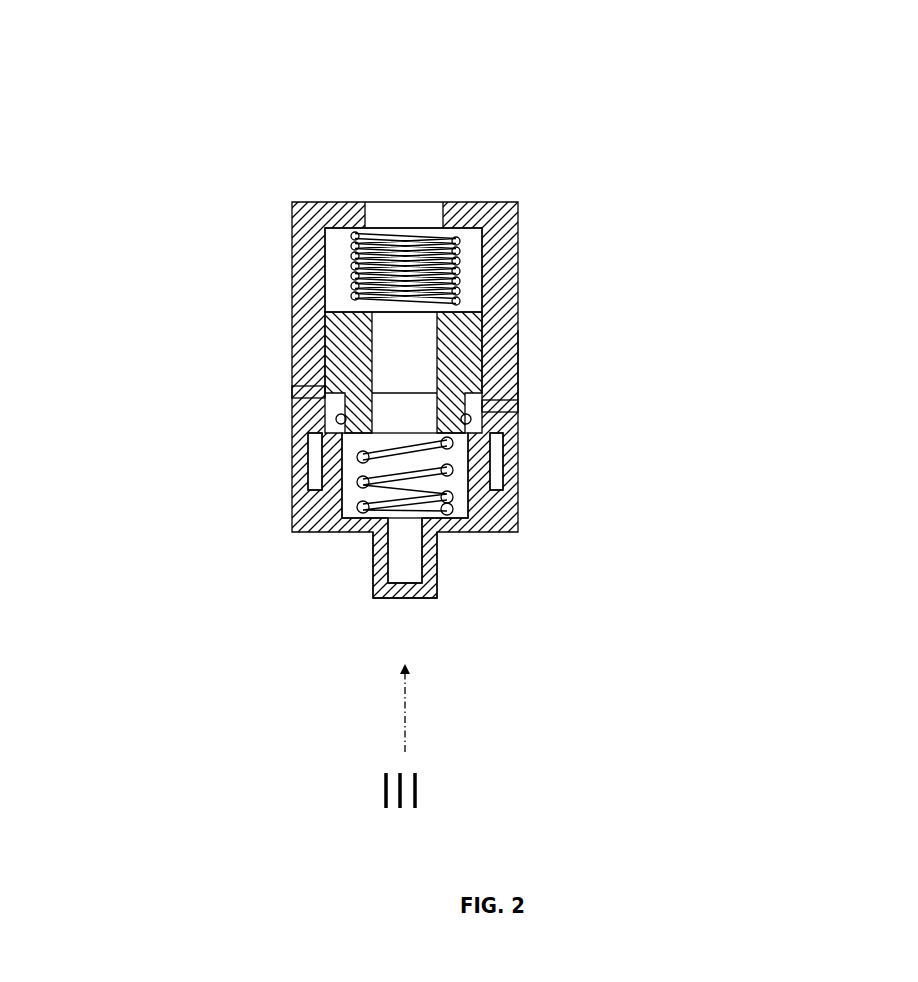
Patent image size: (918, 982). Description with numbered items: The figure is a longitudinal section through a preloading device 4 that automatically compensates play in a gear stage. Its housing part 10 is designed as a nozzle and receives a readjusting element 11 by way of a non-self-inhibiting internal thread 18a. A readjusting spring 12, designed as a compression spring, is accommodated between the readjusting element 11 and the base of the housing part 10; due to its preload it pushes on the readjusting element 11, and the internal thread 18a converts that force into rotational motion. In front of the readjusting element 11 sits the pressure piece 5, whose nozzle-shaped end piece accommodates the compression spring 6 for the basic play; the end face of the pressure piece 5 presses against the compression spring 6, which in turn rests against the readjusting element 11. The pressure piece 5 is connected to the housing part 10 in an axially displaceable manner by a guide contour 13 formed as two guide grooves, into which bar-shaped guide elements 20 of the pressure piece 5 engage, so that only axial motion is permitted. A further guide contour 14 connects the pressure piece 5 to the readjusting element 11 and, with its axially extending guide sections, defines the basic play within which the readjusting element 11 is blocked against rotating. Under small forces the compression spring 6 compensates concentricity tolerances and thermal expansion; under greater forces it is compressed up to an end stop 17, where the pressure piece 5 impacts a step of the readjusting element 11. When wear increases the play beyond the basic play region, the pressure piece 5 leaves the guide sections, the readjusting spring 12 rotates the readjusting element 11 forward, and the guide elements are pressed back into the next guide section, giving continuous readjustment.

The preloading device 4 is at (528, 178).
The pressure piece 5 is at (452, 533).
The compression spring 6 is at (355, 482).
The housing part 10 is at (468, 200).
The readjusting element 11 is at (524, 225).
The readjusting spring 12 is at (345, 257).
The guide contour 13 is at (315, 487).
The further guide contour 14 is at (310, 392).
The end stop 17 is at (500, 407).
The internal thread 18a is at (517, 361).
The guide elements 20 is at (292, 522).